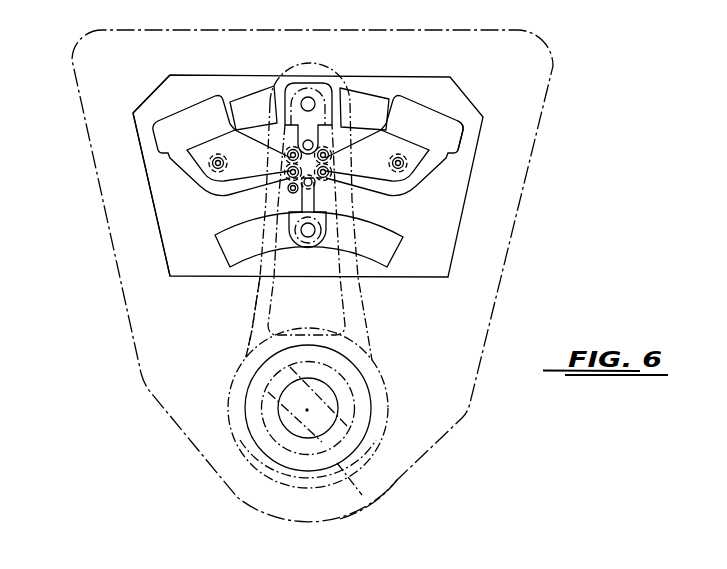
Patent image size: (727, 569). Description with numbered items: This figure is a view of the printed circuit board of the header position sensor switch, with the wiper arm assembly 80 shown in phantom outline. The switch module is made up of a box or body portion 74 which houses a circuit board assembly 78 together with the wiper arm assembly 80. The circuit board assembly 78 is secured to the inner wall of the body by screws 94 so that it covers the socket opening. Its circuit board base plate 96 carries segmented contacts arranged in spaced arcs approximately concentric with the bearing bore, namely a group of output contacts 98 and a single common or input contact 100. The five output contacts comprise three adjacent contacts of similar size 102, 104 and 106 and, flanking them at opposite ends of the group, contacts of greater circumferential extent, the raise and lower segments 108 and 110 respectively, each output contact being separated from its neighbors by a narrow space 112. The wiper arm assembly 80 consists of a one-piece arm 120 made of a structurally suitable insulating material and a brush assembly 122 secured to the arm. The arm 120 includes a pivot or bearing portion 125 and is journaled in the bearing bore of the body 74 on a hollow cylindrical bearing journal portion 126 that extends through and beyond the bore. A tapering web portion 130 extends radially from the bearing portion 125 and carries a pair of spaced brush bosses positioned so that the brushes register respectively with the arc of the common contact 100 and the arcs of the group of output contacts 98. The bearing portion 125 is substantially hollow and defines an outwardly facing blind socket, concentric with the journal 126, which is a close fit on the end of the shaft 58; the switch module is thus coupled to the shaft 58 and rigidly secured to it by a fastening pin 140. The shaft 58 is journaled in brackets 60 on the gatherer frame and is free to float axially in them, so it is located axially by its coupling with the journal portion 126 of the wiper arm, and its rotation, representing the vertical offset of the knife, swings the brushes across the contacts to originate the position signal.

The shaft 58 is at (265, 462).
The brackets 60 is at (310, 490).
The body portion 74 is at (509, 259).
The circuit board assembly 78 is at (137, 176).
The wiper arm assembly 80 is at (252, 307).
The screws 94 is at (227, 164).
The circuit board base plate 96 is at (133, 108).
The output contacts 98 is at (168, 103).
The common contact 100 is at (397, 232).
The contact 102 is at (240, 98).
The contact 104 is at (285, 93).
The contact 106 is at (357, 98).
The raise segment 108 is at (190, 113).
The lower segment 110 is at (450, 120).
The narrow space 112 is at (395, 103).
The arm 120 is at (240, 358).
The brush assembly 122 is at (309, 255).
The bearing portion 125 is at (228, 403).
The bearing journal portion 126 is at (380, 491).
The tapering web portion 130 is at (367, 331).
The pin 140 is at (343, 421).